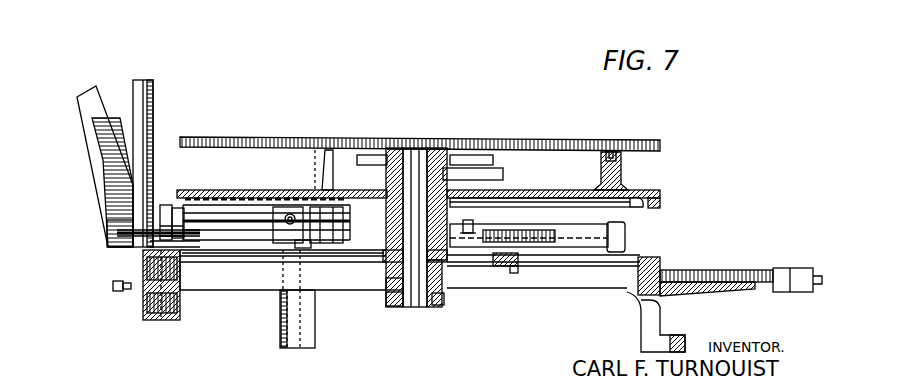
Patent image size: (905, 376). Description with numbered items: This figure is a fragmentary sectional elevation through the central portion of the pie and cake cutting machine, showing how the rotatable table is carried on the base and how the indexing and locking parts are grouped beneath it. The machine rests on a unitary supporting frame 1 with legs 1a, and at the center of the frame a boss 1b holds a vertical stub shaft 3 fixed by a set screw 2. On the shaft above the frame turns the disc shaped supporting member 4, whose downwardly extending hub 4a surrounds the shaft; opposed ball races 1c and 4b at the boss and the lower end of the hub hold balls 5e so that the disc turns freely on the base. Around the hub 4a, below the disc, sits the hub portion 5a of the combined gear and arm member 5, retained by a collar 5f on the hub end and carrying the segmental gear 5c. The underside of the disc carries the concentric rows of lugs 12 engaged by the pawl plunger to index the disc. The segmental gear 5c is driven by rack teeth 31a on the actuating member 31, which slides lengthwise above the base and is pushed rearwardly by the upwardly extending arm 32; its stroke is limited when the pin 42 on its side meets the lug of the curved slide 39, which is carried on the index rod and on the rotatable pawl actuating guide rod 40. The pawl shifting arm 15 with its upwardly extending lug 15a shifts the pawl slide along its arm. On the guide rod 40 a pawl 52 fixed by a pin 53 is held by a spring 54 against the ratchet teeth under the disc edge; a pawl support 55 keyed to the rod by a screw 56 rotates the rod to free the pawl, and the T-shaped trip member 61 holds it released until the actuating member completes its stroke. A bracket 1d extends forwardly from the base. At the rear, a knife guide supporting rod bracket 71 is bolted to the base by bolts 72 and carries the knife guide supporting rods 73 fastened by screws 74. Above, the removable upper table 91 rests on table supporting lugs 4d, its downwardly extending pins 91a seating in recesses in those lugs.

The supporting frame 1 is at (223, 290).
The legs 1a is at (280, 327).
The boss 1b is at (400, 292).
The ball race 1c is at (395, 275).
The bracket 1d is at (707, 288).
The set screw 2 is at (436, 306).
The vertical stub shaft 3 is at (413, 307).
The supporting member 4 is at (650, 193).
The hub 4a is at (455, 205).
The ball race 4b is at (393, 191).
The table supporting lugs 4d is at (617, 177).
The combined gear and arm member 5 is at (478, 236).
The hub portion 5a is at (460, 223).
The segmental gear 5c is at (500, 200).
The balls 5e is at (390, 268).
The collar 5f is at (450, 252).
The lugs 12 is at (218, 185).
The pawl shifting arm 15 is at (520, 267).
The lug 15a is at (500, 268).
The actuating member 31 is at (590, 238).
The rack teeth 31a is at (550, 235).
The arm 32 is at (100, 151).
The slide 39 is at (298, 246).
The pawl actuating guide rod 40 is at (231, 212).
The pin 42 is at (563, 228).
The pawl 52 is at (170, 192).
The pin 53 is at (175, 231).
The spring 54 is at (195, 233).
The pawl support 55 is at (283, 223).
The screw 56 is at (300, 228).
The trip member 61 is at (218, 287).
The knife guide supporting rod bracket 71 is at (146, 320).
The bolts 72 is at (145, 307).
The knife guide supporting rods 73 is at (137, 92).
The screws 74 is at (113, 287).
The upper table 91 is at (573, 140).
The pins 91a is at (615, 140).